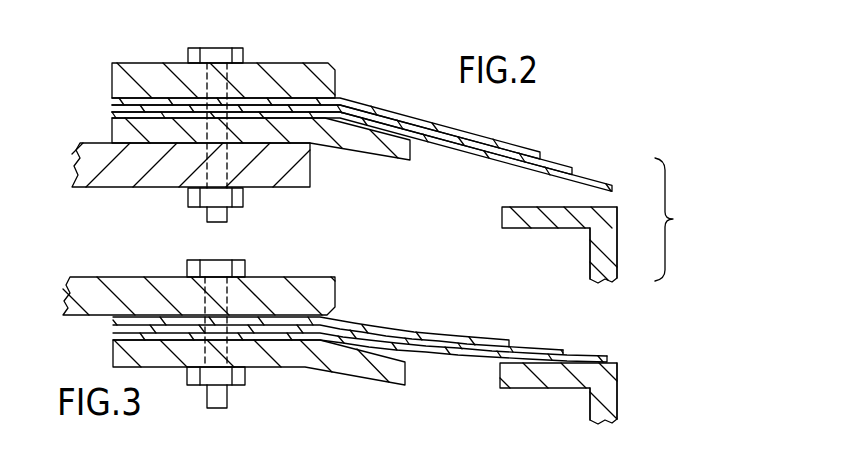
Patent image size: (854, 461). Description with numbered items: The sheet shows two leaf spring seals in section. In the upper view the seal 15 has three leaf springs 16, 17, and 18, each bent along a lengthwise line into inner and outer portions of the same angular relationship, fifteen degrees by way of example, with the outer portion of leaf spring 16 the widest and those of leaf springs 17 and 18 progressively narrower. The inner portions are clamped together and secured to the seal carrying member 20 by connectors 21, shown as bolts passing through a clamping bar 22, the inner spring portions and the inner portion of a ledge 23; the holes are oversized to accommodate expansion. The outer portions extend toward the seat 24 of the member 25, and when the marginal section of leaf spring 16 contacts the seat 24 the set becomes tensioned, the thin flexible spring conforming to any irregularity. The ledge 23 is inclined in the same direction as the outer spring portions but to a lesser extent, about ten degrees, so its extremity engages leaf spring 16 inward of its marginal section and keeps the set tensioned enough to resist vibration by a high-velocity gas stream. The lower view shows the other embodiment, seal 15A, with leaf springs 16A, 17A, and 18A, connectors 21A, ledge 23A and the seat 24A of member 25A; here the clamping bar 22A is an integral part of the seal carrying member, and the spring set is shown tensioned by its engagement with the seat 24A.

In FIG. 2, the seal 15 is at (380, 120).
In FIG. 2, the leaf spring 16 is at (612, 190).
In FIG. 2, the leaf spring 17 is at (572, 172).
In FIG. 2, the leaf spring 18 is at (540, 152).
In FIG. 2, the seal carrying member 20 is at (311, 185).
In FIG. 2, the connectors 21 is at (244, 57).
In FIG. 2, the clamping bar 22 is at (336, 78).
In FIG. 2, the ledge 23 is at (410, 158).
In FIG. 2, the seat 24 is at (502, 210).
In FIG. 2, the member 25 is at (617, 262).
In FIG. 3, the seal 15A is at (350, 317).
In FIG. 3, the leaf spring 16A is at (598, 355).
In FIG. 3, the leaf spring 17A is at (558, 350).
In FIG. 3, the leaf spring 18A is at (502, 339).
In FIG. 3, the connectors 21A is at (243, 261).
In FIG. 3, the clamping bar 22A is at (320, 277).
In FIG. 3, the ledge 23A is at (405, 380).
In FIG. 3, the seat 24A is at (612, 363).
In FIG. 3, the member 25A is at (617, 398).